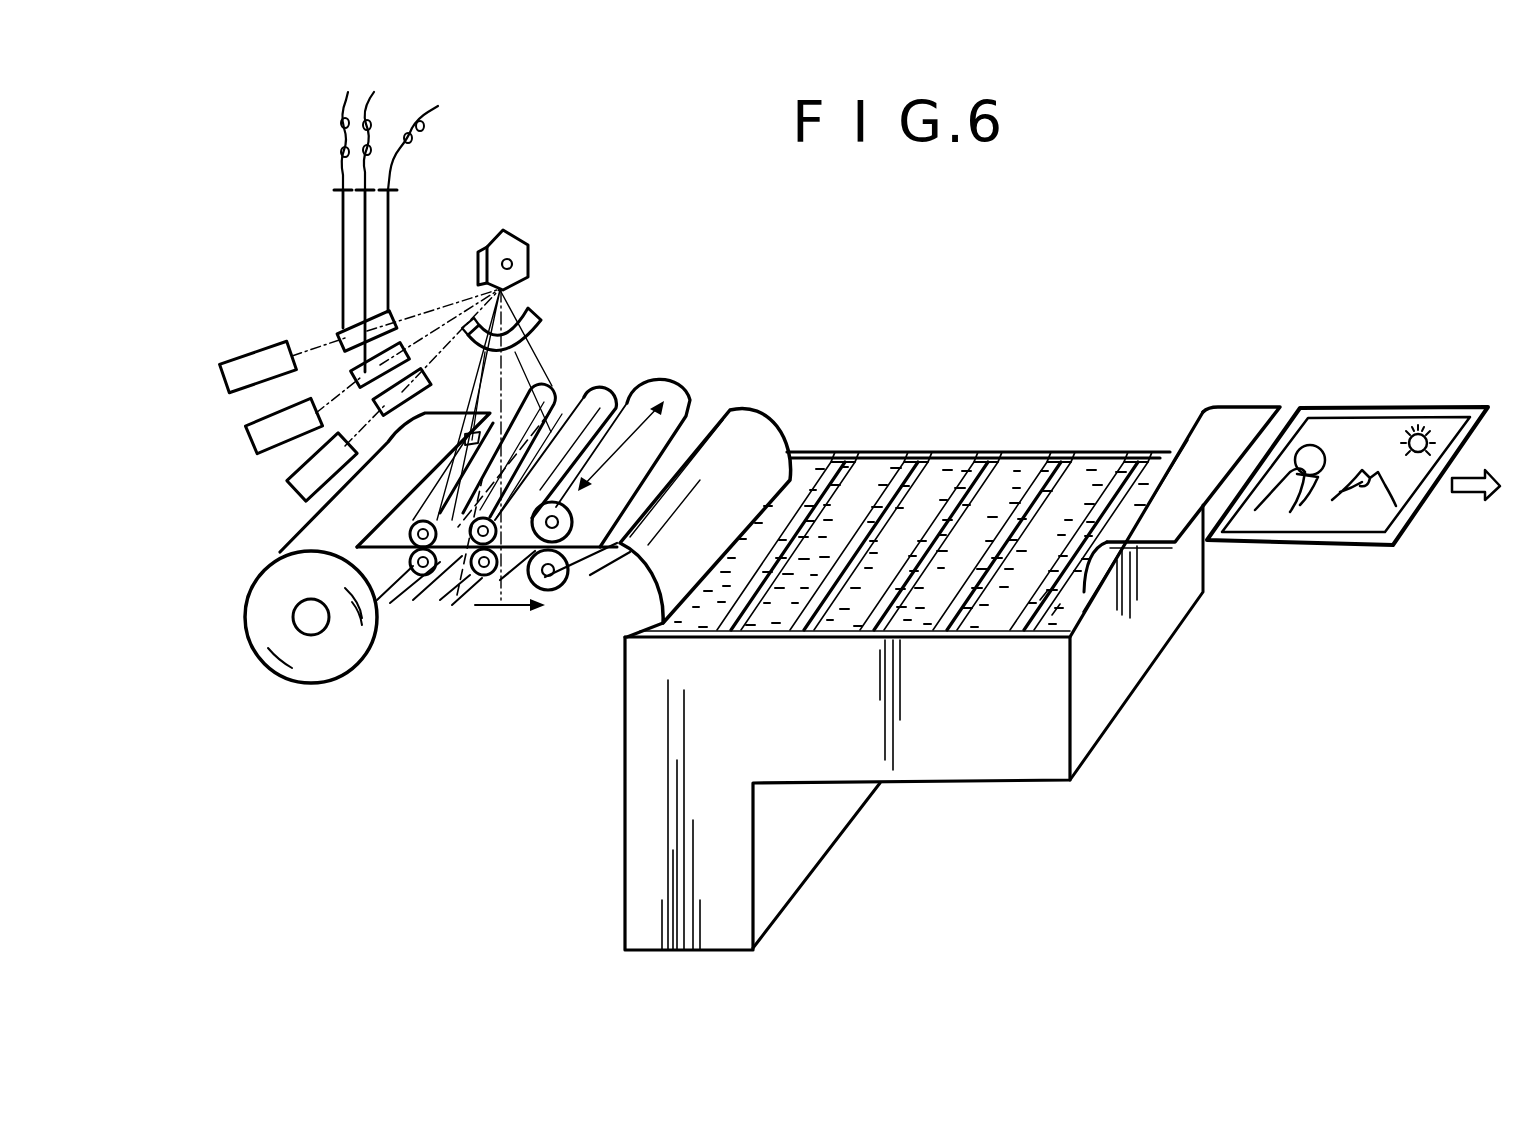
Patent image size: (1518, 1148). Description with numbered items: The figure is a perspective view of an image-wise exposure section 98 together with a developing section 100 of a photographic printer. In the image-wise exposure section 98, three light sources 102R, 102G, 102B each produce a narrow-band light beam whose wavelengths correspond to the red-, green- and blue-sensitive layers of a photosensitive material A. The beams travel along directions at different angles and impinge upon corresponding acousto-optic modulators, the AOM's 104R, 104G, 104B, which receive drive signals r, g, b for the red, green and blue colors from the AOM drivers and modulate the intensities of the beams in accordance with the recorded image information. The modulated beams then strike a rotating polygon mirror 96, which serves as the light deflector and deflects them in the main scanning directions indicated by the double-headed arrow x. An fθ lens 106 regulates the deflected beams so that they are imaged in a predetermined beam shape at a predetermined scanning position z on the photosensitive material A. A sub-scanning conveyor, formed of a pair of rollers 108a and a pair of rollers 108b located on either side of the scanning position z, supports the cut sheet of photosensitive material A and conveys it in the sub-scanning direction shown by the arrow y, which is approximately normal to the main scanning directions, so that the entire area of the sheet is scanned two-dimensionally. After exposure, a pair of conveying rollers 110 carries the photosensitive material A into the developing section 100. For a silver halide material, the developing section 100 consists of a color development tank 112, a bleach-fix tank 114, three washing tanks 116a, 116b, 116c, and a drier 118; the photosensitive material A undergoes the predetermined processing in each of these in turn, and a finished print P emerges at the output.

The rotating polygon mirror 96 is at (515, 255).
The image-wise exposure section 98 is at (467, 628).
The developing section 100 is at (1110, 400).
The light source 102R is at (237, 362).
The light source 102G is at (260, 428).
The light source 102B is at (298, 490).
The AOM 104R is at (337, 326).
The AOM 104G is at (357, 373).
The AOM 104B is at (415, 375).
The fθ lens 106 is at (541, 322).
The pair of rollers 108a is at (405, 588).
The pair of rollers 108b is at (590, 395).
The pair of conveying rollers 110 is at (557, 590).
The color development tank 112 is at (820, 473).
The bleach-fix tank 114 is at (762, 618).
The washing tank 116a is at (953, 480).
The washing tank 116b is at (897, 612).
The washing tank 116c is at (985, 612).
The drier 118 is at (1053, 612).
The photosensitive material A is at (708, 416).
The finished print P is at (1302, 528).
The drive signal r is at (342, 208).
The drive signal g is at (366, 182).
The drive signal b is at (392, 206).
The main scanning directions x is at (640, 438).
The sub-scanning direction y is at (500, 608).
The scanning position z is at (460, 550).